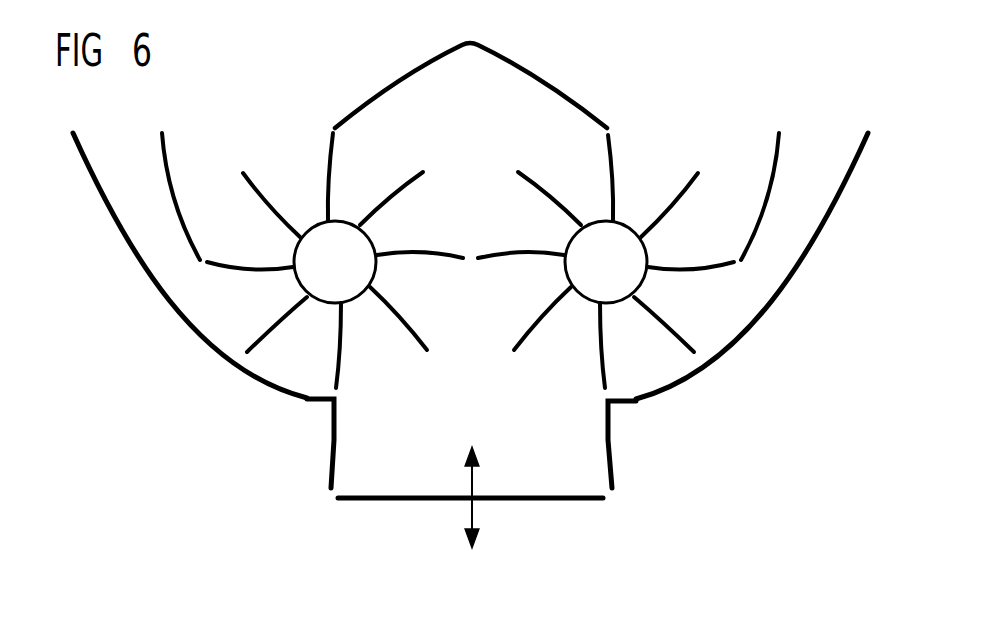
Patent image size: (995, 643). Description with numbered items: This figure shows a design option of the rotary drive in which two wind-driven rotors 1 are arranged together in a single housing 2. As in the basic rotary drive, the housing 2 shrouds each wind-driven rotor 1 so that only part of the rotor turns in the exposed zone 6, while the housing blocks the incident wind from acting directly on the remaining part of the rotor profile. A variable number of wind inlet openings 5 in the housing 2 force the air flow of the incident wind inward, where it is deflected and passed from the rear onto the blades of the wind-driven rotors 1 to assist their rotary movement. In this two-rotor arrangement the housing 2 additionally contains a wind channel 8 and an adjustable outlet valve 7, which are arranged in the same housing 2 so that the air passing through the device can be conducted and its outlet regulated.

The wind-driven rotor 1 is at (323, 299).
The housing 2 is at (518, 60).
The wind inlet openings 5 is at (217, 152).
The exposed zone 6 is at (290, 152).
The adjustable outlet valve 7 is at (532, 500).
The wind channel 8 is at (580, 442).